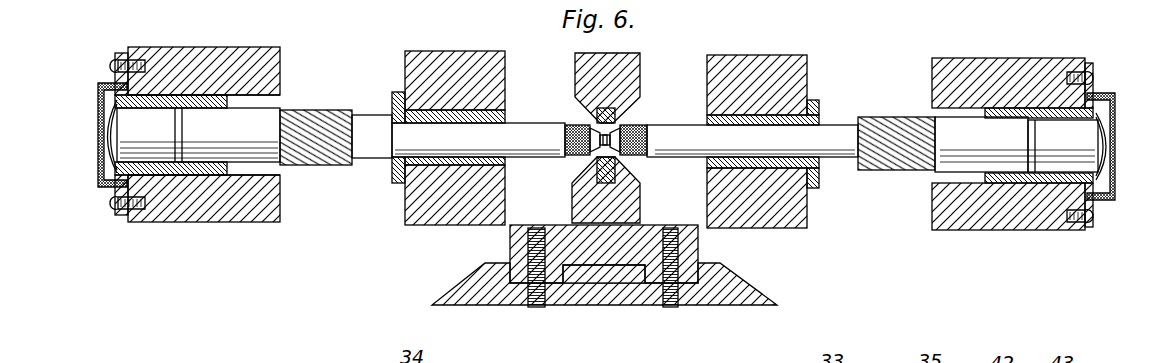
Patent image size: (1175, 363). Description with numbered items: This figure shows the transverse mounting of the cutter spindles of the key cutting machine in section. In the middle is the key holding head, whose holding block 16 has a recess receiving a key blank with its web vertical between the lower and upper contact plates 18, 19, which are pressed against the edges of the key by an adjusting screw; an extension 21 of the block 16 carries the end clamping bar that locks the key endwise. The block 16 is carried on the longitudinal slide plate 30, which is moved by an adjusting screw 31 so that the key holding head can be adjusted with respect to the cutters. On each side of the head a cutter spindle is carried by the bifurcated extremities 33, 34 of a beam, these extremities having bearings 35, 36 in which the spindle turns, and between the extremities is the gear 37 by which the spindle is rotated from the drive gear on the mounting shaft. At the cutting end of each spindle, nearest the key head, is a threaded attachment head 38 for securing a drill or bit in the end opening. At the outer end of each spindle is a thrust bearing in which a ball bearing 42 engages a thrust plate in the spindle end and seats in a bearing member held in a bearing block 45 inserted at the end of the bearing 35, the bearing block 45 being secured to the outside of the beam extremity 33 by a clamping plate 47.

The holding block 16 is at (632, 75).
The lower contact plate 18 is at (615, 173).
The upper contact plate 19 is at (607, 112).
The extension 21 is at (703, 248).
The longitudinal slide plate 30 is at (720, 297).
The adjusting screw 31 is at (402, 133).
The bifurcated extremity 33 is at (170, 207).
The bifurcated extremity 34 is at (427, 212).
The bearing 35 is at (105, 173).
The bearing 36 is at (822, 103).
The gear 37 is at (310, 157).
The threaded attachment head 38 is at (577, 155).
The ball bearing 42 is at (1028, 145).
The bearing block 45 is at (1113, 140).
The clamping plate 47 is at (98, 132).